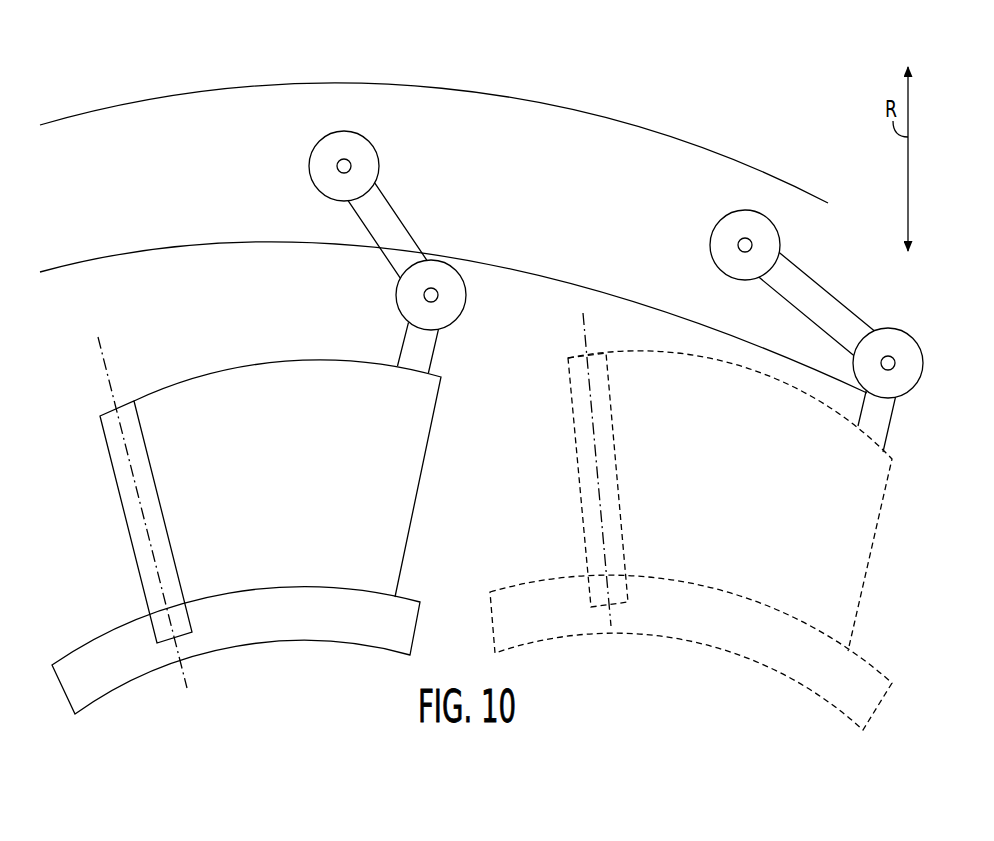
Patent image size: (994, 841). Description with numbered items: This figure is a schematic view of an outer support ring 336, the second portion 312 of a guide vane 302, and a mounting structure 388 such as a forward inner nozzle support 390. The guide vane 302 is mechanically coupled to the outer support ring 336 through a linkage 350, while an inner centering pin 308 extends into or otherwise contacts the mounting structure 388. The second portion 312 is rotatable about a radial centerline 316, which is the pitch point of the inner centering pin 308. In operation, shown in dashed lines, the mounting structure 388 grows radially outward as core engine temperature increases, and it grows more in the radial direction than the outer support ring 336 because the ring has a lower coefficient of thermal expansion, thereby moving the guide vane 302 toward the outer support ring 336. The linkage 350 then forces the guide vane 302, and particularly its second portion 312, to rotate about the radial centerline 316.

The guide vane 302 is at (535, 474).
The inner centering pin 308 is at (152, 617).
The second portion 312 is at (304, 423).
The radial centerline 316 is at (125, 458).
The outer support ring 336 is at (298, 105).
The linkage 350 is at (390, 217).
The mounting structure 388 is at (455, 668).
The forward inner nozzle support 390 is at (285, 627).